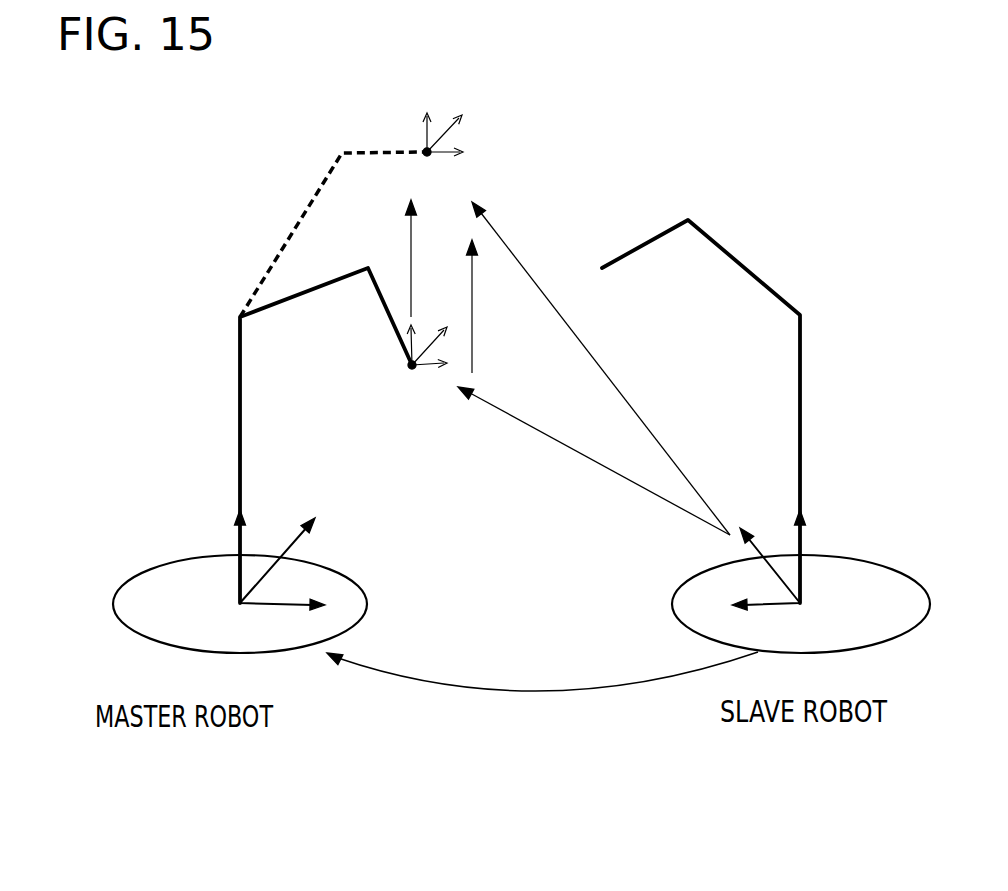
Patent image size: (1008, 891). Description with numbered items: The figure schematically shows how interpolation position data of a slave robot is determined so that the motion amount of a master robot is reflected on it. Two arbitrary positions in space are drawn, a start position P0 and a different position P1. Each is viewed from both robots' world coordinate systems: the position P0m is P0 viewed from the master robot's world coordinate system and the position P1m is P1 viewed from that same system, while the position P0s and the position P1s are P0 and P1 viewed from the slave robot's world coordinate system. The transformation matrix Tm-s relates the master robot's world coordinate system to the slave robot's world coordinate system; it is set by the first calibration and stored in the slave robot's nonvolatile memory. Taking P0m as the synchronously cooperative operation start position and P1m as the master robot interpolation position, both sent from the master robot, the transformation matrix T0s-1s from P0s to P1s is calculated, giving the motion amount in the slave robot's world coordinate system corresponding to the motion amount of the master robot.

The position at which P1 is viewed from the world coordinate system of master robot P1m is at (426, 110).
The arbitrary position in the space P1 is at (430, 157).
The position at which P1 is viewed from the world coordinate system of slave robot P1s is at (601, 361).
The position at which P0 is viewed from the world coordinate system of master robot P0m is at (397, 361).
The arbitrary position in the space P0 is at (412, 369).
The position at which P0 is viewed from the world coordinate system of slave robot P0s is at (594, 461).
The transformation matrix from P0s to P1s T0s-1s is at (520, 309).
The transformation matrix Tm-s is at (542, 698).